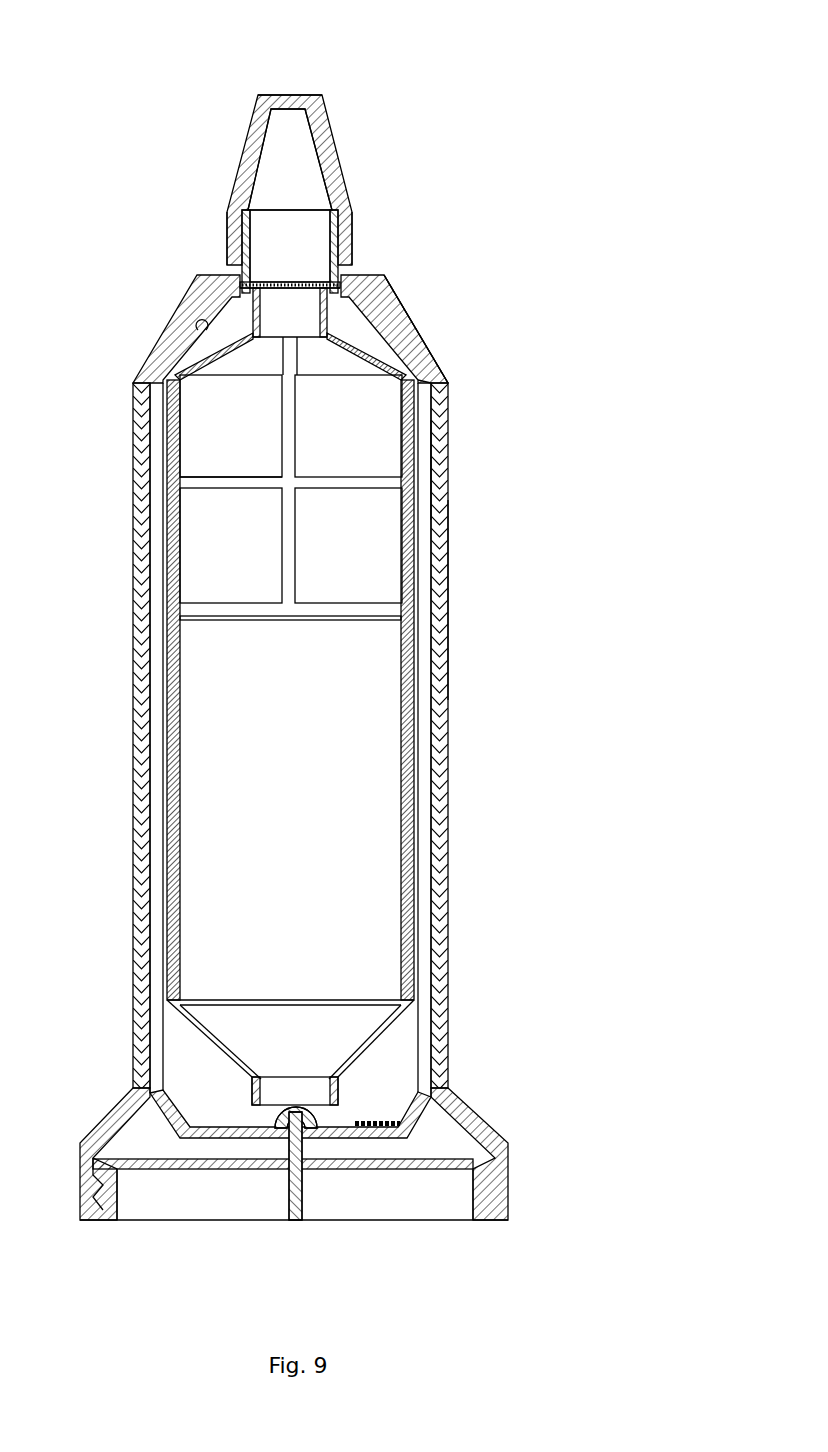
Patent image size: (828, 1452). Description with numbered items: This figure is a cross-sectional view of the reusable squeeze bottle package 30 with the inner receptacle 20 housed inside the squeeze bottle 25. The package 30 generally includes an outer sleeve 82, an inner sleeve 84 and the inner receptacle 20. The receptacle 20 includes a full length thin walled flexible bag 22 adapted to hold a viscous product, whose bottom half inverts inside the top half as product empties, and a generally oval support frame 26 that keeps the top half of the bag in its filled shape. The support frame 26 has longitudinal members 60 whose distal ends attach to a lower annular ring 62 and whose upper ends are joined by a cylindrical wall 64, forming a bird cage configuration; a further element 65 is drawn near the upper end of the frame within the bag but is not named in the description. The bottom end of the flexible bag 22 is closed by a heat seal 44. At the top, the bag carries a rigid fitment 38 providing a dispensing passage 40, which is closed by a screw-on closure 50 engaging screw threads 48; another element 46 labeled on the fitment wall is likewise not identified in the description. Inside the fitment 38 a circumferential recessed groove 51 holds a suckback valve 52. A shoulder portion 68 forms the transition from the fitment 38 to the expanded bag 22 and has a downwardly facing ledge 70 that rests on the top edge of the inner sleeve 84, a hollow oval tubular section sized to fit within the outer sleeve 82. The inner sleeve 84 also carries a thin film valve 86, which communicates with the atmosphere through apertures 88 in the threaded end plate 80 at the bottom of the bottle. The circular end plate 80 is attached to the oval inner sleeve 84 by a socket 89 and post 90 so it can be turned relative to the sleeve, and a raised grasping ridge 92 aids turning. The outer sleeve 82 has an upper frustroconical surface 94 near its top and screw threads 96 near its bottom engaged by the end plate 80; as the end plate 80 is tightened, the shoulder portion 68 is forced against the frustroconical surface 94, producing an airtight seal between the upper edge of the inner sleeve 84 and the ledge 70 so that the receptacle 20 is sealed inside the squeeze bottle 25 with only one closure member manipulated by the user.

The receptacle 20 is at (408, 1038).
The flexible bag 22 is at (438, 729).
The squeeze bottle 25 is at (462, 478).
The support frame 26 is at (212, 472).
The package 30 is at (462, 376).
The rigid fitment 38 is at (347, 187).
The dispensing passage 40 is at (293, 162).
The heat seal 44 is at (290, 1095).
The neck 46 is at (342, 227).
The screw threads 48 is at (352, 243).
The closure 50 is at (291, 96).
The recessed groove 51 is at (252, 282).
The suckback valve 52 is at (333, 276).
The longitudinal members 60 is at (178, 570).
The lower annular ring 62 is at (362, 620).
The cylindrical wall 64 is at (265, 483).
The inlet cup 65 is at (277, 329).
The shoulder portion 68 is at (400, 332).
The ledge 70 is at (427, 386).
The end plate 80 is at (332, 1170).
The outer sleeve 82 is at (442, 611).
The inner sleeve 84 is at (432, 690).
The thin film valve 86 is at (408, 1128).
The apertures 88 is at (193, 1167).
The socket 89 is at (281, 1120).
The post 90 is at (290, 1122).
The grasping ridge 92 is at (291, 1200).
The frustroconical surface 94 is at (177, 322).
The screw threads 96 is at (473, 1220).